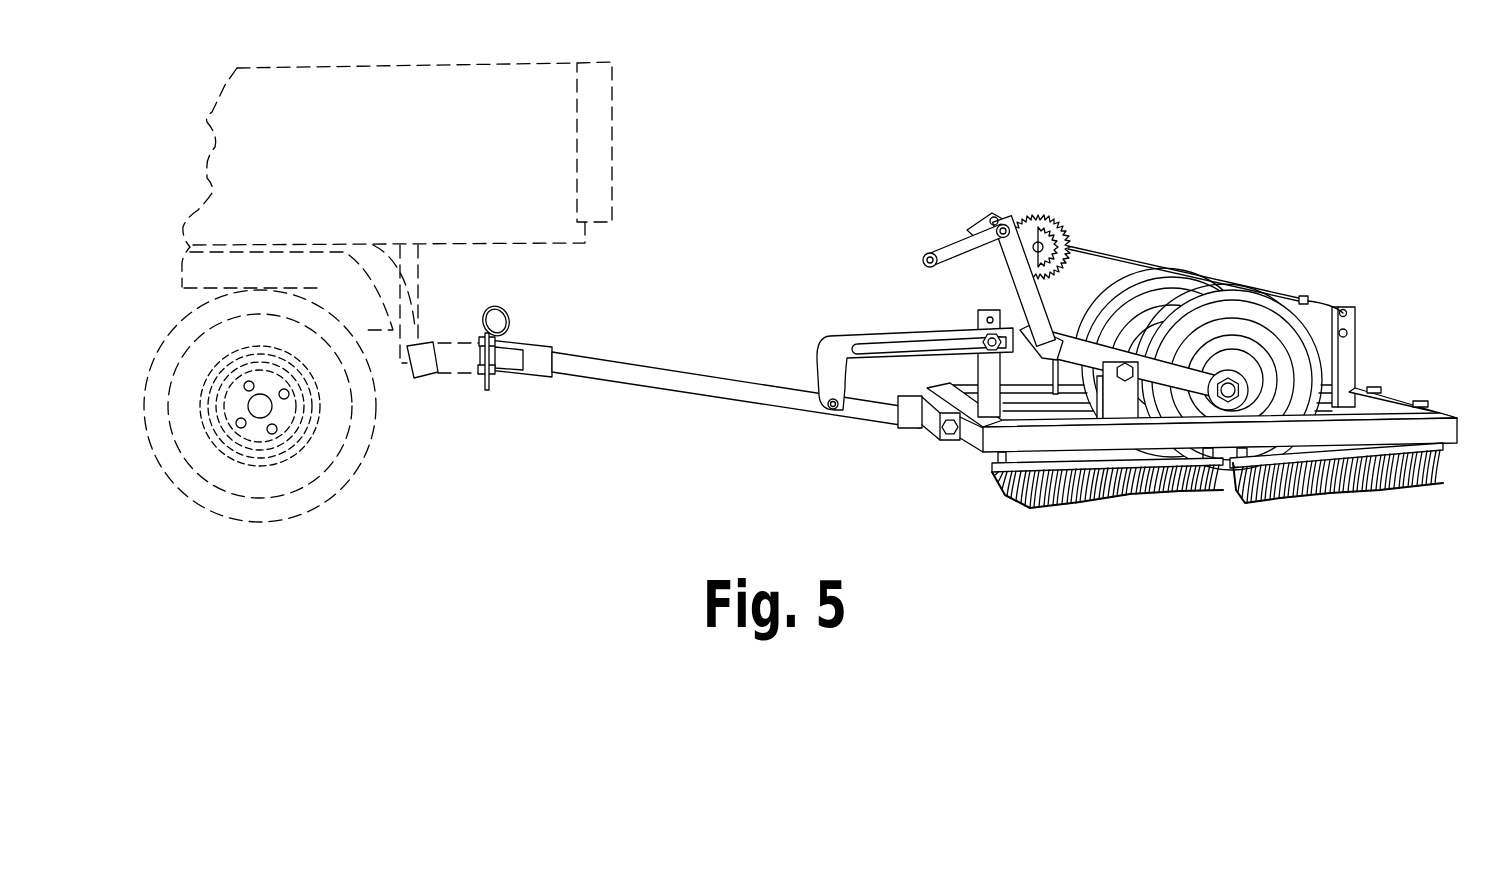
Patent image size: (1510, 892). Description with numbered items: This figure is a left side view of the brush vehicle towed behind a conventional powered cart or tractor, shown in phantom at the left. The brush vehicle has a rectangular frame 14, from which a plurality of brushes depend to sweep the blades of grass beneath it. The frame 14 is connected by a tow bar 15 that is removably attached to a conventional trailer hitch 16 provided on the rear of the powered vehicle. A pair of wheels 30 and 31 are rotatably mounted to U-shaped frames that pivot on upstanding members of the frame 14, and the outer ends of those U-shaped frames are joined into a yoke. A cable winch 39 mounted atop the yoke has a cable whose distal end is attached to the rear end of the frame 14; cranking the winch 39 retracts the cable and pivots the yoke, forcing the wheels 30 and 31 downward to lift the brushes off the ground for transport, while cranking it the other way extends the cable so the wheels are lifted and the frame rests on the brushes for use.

The rectangular frame 14 is at (1445, 433).
The tow bar 15 is at (677, 378).
The trailer hitch 16 is at (430, 373).
The wheel 30 is at (1228, 292).
The wheel 31 is at (1153, 280).
The cable winch 39 is at (1053, 228).